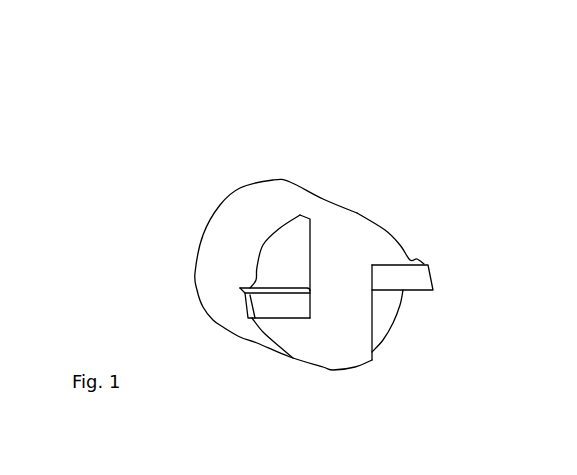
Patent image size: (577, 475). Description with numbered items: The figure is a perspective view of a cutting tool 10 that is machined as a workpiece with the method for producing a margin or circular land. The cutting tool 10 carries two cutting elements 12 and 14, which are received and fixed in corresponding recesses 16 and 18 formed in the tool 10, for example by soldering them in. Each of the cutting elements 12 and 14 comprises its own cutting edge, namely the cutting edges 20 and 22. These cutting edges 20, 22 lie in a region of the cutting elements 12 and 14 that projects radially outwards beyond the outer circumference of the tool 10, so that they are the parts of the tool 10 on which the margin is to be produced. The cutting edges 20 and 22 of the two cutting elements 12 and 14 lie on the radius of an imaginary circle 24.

The cutting tool 10 is at (440, 151).
The cutting element 12 is at (290, 302).
The cutting element 14 is at (413, 272).
The recess 16 is at (278, 262).
The recess 18 is at (380, 310).
The cutting edge 20 is at (433, 290).
The cutting edge 22 is at (240, 293).
The imaginary circle 24 is at (262, 474).